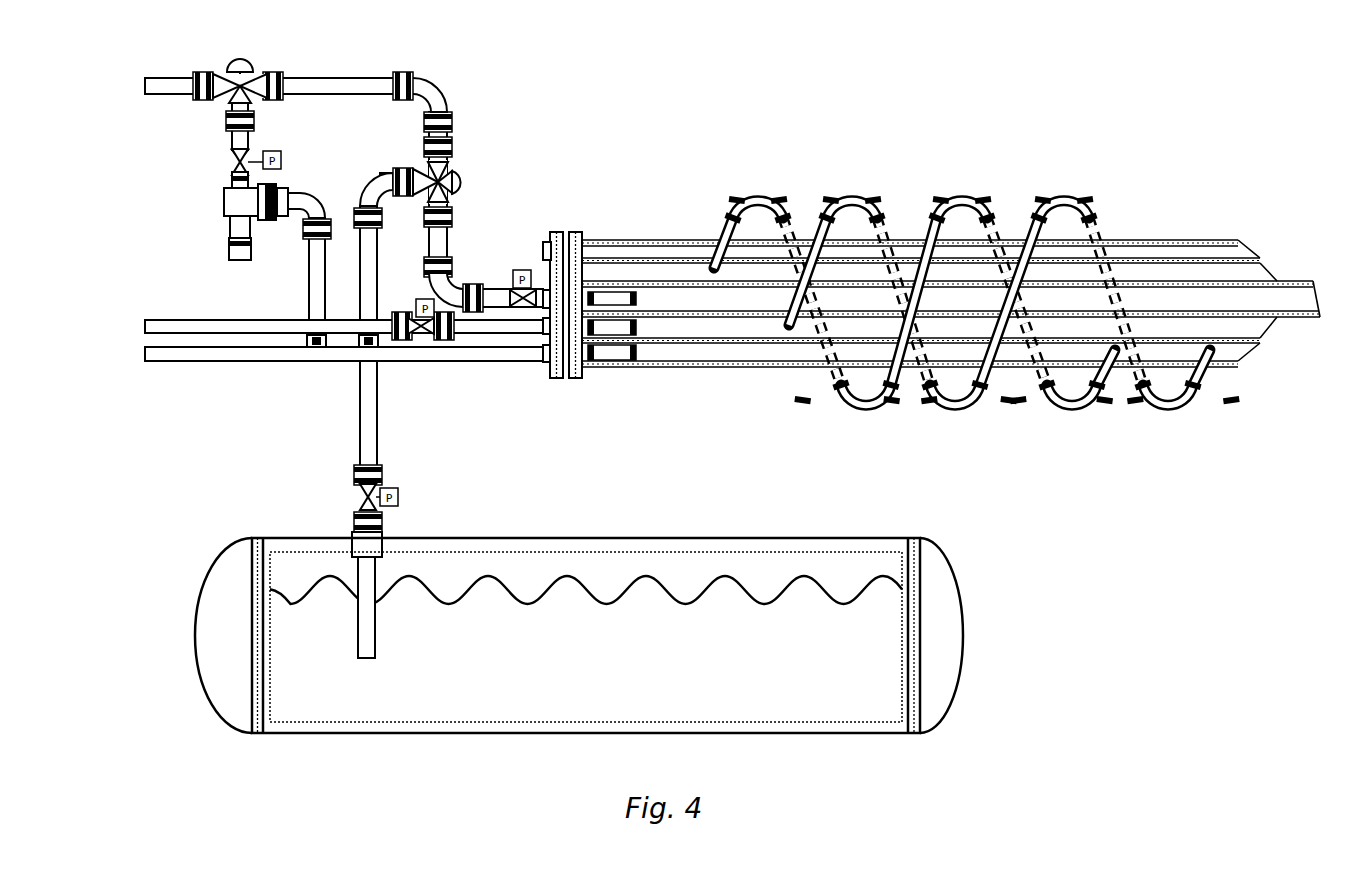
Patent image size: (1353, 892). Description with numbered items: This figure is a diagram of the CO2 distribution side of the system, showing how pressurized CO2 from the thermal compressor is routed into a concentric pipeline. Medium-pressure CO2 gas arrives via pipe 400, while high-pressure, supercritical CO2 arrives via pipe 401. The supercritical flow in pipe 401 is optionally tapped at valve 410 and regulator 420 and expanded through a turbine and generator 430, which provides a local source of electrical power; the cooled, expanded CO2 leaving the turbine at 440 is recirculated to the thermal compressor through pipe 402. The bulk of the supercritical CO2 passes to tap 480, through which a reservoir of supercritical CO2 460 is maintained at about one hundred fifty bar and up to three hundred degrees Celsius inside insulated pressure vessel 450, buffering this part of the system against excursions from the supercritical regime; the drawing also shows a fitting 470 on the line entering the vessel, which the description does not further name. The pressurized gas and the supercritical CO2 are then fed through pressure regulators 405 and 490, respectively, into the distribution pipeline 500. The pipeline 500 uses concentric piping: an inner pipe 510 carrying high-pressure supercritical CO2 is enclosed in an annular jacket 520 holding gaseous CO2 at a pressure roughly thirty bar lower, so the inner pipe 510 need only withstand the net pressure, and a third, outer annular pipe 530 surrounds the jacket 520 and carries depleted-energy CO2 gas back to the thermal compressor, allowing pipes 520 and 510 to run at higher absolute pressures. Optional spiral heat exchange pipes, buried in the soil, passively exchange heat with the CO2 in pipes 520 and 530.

The pipe 400 is at (191, 313).
The pipe 401 is at (160, 97).
The pipe 402 is at (188, 363).
The pressure regulator 405 is at (413, 306).
The valve 410 is at (250, 68).
The regulator 420 is at (283, 163).
The turbine and generator 430 is at (223, 222).
The turbine exit 440 is at (303, 305).
The insulated pressure vessel 450 is at (782, 545).
The reservoir of supercritical CO2 460 is at (586, 624).
The pressure control valve 470 is at (405, 500).
The tap 480 is at (470, 188).
The pressure regulator 490 is at (530, 267).
The distribution pipeline 500 is at (665, 197).
The inner pipe 510 is at (653, 300).
The annular jacket 520 is at (692, 327).
The outer annular pipe 530 is at (740, 350).